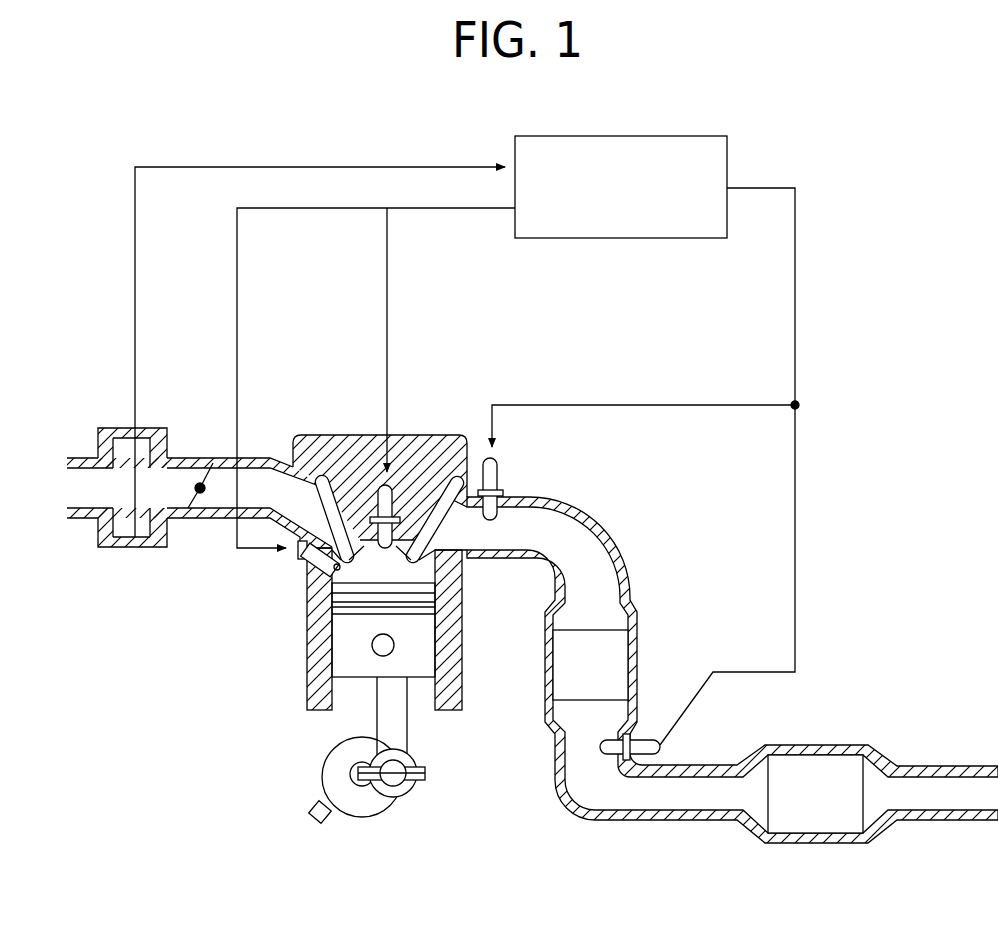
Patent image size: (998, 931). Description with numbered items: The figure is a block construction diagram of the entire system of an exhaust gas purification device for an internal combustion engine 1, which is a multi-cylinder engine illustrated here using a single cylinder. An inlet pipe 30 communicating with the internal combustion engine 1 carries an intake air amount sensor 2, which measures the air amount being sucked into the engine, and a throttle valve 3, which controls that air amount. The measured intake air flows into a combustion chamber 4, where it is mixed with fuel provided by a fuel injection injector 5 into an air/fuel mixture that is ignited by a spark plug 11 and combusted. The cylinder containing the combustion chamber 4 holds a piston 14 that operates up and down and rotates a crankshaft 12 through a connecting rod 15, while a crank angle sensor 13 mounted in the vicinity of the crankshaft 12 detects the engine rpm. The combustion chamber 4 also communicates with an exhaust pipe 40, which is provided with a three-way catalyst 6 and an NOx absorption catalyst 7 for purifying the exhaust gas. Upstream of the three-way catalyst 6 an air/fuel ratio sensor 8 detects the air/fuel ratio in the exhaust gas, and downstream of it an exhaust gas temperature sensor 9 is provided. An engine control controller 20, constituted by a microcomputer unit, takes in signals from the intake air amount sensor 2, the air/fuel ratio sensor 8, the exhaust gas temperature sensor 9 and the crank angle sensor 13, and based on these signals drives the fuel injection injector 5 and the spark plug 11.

The internal combustion engine 1 is at (318, 435).
The intake air amount sensor 2 is at (123, 447).
The throttle valve 3 is at (200, 493).
The combustion chamber 4 is at (393, 575).
The fuel injection injector 5 is at (310, 572).
The three-way catalyst 6 is at (602, 660).
The NOx absorption catalyst 7 is at (822, 815).
The air/fuel ratio sensor 8 is at (500, 468).
The exhaust gas temperature sensor 9 is at (653, 740).
The spark plug 11 is at (397, 482).
The crankshaft 12 is at (370, 806).
The crank angle sensor 13 is at (306, 820).
The piston 14 is at (345, 648).
The connecting rod 15 is at (402, 739).
The engine control controller 20 is at (670, 136).
The inlet pipe 30 is at (187, 457).
The exhaust pipe 40 is at (580, 512).